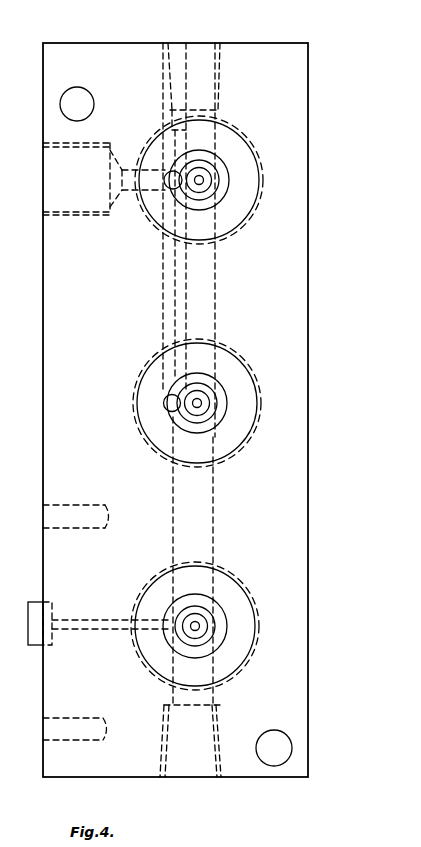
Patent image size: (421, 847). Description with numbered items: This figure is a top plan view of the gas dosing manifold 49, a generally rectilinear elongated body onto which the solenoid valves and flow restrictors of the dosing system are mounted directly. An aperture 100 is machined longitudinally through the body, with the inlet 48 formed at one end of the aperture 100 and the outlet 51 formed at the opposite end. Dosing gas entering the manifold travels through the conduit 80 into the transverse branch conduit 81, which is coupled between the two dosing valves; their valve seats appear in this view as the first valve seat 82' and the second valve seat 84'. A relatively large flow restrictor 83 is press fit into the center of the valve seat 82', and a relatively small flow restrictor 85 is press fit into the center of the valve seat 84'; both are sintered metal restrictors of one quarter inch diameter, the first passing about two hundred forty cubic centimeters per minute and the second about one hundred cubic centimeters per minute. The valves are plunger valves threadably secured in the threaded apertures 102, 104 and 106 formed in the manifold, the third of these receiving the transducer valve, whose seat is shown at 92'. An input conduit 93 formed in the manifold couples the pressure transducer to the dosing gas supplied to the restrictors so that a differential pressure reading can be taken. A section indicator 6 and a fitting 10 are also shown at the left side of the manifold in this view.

The section indicator / side port 6 is at (43, 173).
The fitting 10 is at (32, 610).
The inlet 48 is at (217, 43).
The gas dosing manifold 49 is at (306, 683).
The outlet 51 is at (214, 768).
The conduit 80 is at (152, 133).
The branch conduit 81 is at (164, 300).
The valve seat 82' is at (245, 178).
The first relatively large flow restrictor 83 is at (204, 181).
The valve seat 84' is at (241, 402).
The second relatively small flow restrictor 85 is at (202, 403).
The third cylinder bore 92' is at (243, 626).
The input conduit 93 is at (90, 632).
The aperture 100 is at (216, 526).
The threaded aperture 102 is at (148, 222).
The threaded aperture 104 is at (163, 410).
The threaded aperture 106 is at (260, 634).